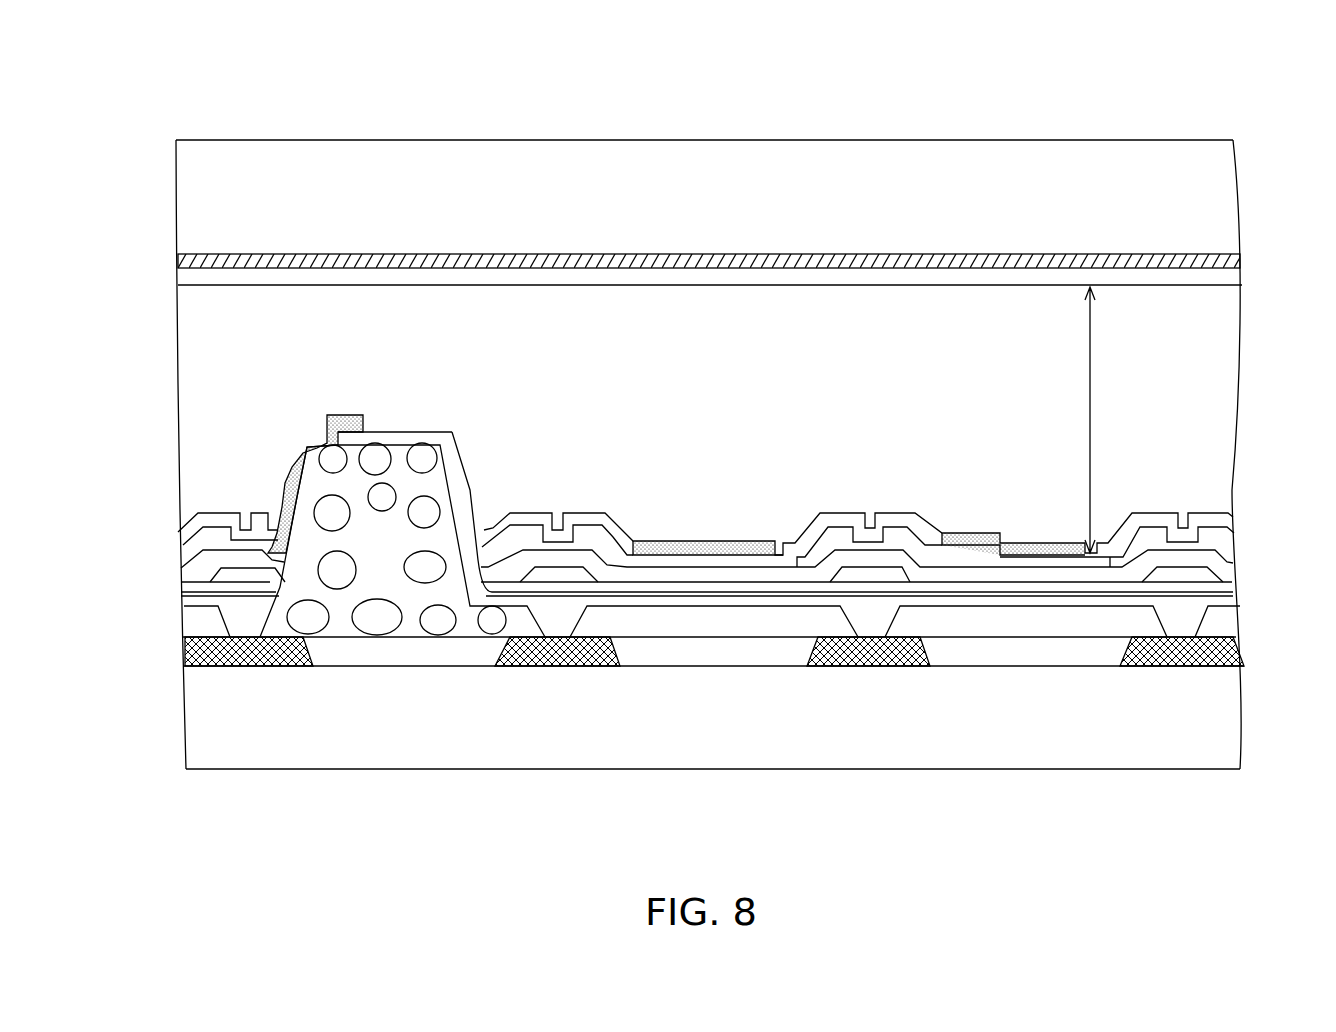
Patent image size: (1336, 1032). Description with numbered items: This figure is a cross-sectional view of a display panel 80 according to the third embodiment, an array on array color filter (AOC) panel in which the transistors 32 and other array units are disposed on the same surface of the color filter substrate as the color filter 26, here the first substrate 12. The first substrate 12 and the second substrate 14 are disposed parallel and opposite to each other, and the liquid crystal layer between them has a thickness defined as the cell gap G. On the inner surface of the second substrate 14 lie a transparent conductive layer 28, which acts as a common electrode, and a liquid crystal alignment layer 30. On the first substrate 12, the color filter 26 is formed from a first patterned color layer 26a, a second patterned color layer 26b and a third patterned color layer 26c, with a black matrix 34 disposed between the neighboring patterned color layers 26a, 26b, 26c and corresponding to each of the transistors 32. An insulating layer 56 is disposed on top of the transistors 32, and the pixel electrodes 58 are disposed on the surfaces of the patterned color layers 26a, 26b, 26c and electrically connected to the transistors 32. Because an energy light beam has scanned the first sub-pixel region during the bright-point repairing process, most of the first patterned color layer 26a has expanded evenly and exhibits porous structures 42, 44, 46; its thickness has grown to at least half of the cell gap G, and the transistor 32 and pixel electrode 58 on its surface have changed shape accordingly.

The display panel 80 is at (1222, 126).
The second substrate 14 is at (706, 212).
The transparent conductive layer 28 is at (1224, 258).
The liquid crystal alignment layer 30 is at (1224, 277).
The cell gap G is at (1078, 420).
The porous structure 44 is at (423, 456).
The porous structure 42 is at (427, 506).
The pixel electrode 58 is at (290, 468).
The color filter 26 is at (178, 608).
The first patterned color layer 26a is at (398, 552).
The second patterned color layer 26b is at (745, 625).
The third patterned color layer 26c is at (1028, 625).
The transistor 32 is at (877, 620).
The porous structure 46 is at (378, 624).
The first substrate 12 is at (678, 731).
The black matrix 34 is at (1225, 655).
The insulating layer 56 is at (1227, 600).